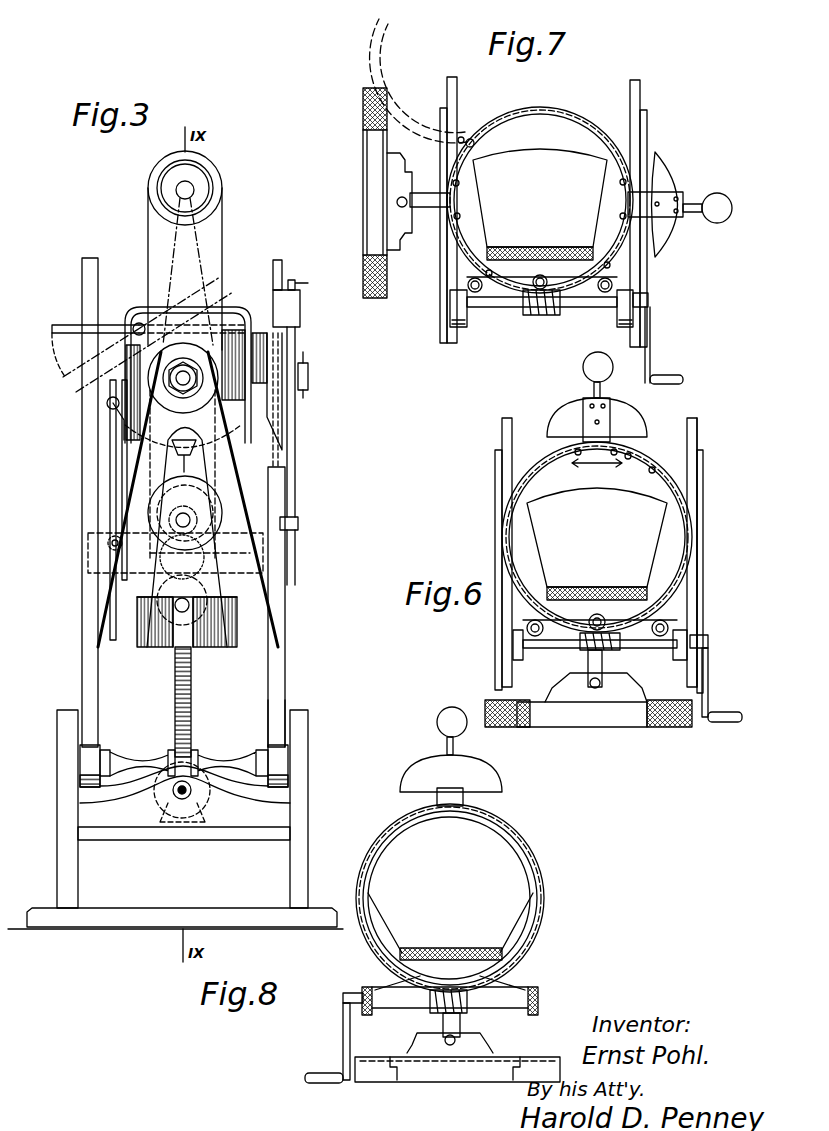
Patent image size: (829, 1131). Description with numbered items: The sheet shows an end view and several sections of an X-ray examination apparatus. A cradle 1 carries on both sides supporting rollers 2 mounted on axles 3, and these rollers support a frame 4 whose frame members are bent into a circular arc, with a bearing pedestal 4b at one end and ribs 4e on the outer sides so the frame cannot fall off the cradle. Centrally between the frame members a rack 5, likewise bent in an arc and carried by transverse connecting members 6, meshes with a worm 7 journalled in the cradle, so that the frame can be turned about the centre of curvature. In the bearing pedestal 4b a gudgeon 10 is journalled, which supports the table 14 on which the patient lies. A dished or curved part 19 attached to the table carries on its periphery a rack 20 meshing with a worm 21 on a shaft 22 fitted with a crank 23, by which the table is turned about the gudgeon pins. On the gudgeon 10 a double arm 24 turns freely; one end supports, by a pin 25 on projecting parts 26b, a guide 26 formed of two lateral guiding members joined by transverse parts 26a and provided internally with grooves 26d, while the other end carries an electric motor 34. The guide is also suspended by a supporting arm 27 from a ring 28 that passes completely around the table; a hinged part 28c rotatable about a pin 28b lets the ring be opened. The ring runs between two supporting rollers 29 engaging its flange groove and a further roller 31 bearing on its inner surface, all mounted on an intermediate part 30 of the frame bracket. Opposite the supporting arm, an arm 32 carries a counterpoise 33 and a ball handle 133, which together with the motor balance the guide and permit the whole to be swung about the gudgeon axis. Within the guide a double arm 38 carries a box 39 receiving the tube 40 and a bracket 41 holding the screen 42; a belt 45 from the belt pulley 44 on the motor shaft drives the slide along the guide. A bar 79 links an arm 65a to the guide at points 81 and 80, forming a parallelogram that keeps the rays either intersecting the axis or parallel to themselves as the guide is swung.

In FIG. 3, the cradle 1 is at (300, 846).
In FIG. 3, the supporting rollers 2 is at (86, 781).
In FIG. 3, the axles 3 is at (80, 763).
In FIG. 7, the axles 3 is at (540, 204).
In FIG. 6, the axles 3 is at (648, 497).
In FIG. 3, the frame 4 is at (85, 660).
In FIG. 6, the frame 4 is at (690, 596).
In FIG. 3, the bearing pedestal 4b is at (238, 476).
In FIG. 3, the ribs 4e is at (286, 681).
In FIG. 3, the rack 5 is at (193, 712).
In FIG. 3, the transverse connecting members 6 is at (142, 752).
In FIG. 3, the worm 7 is at (197, 796).
In FIG. 3, the gudgeon 10 is at (222, 330).
In FIG. 8, the table 14 is at (437, 957).
In FIG. 8, the dished or curved part 19 is at (384, 938).
In FIG. 8, the rack 20 is at (372, 947).
In FIG. 8, the worm 21 is at (468, 1005).
In FIG. 8, the shaft 22 is at (410, 1003).
In FIG. 7, the crank 23 is at (658, 338).
In FIG. 6, the crank 23 is at (708, 684).
In FIG. 8, the crank 23 is at (343, 1046).
In FIG. 3, the double arm 24 is at (161, 226).
In FIG. 3, the pin 25 is at (287, 533).
In FIG. 3, the guide 26 is at (100, 563).
In FIG. 7, the guide 26 is at (368, 105).
In FIG. 6, the guide 26 is at (501, 727).
In FIG. 8, the guide 26 is at (536, 1064).
In FIG. 6, the transverse parts 26a is at (660, 722).
In FIG. 7, the projecting parts 26b is at (393, 186).
In FIG. 6, the projecting parts 26b is at (603, 702).
In FIG. 6, the grooves 26d is at (532, 724).
In FIG. 6, the supporting arm 27 is at (603, 665).
In FIG. 7, the ring 28 is at (470, 250).
In FIG. 6, the ring 28 is at (686, 580).
In FIG. 8, the ring 28 is at (537, 873).
In FIG. 7, the pin 28b is at (472, 140).
In FIG. 7, the hinged part 28c is at (552, 118).
In FIG. 7, the supporting rollers 29 is at (468, 286).
In FIG. 6, the supporting rollers 29 is at (527, 636).
In FIG. 7, the intermediate part 30 is at (522, 290).
In FIG. 6, the intermediate part 30 is at (578, 627).
In FIG. 7, the roller 31 is at (543, 312).
In FIG. 6, the roller 31 is at (598, 612).
In FIG. 7, the arm 32 is at (646, 200).
In FIG. 6, the arm 32 is at (596, 420).
In FIG. 8, the arm 32 is at (450, 797).
In FIG. 7, the counterpoise 33 is at (662, 172).
In FIG. 6, the counterpoise 33 is at (574, 410).
In FIG. 8, the counterpoise 33 is at (418, 768).
In FIG. 3, the electric motor 34 is at (215, 174).
In FIG. 3, the double arm 38 is at (275, 503).
In FIG. 3, the box 39 is at (228, 630).
In FIG. 3, the tube 40 is at (182, 618).
In FIG. 3, the bracket 41 is at (139, 322).
In FIG. 3, the screen 42 is at (67, 322).
In FIG. 3, the belt pulley 44 is at (195, 192).
In FIG. 3, the belt 45 is at (200, 262).
In FIG. 3, the arm 65a is at (107, 404).
In FIG. 3, the bar 79 is at (116, 441).
In FIG. 3, the engagement point 80 is at (108, 544).
In FIG. 3, the engagement point 81 is at (113, 409).
In FIG. 7, the ball handle 133 is at (723, 198).
In FIG. 6, the ball handle 133 is at (590, 370).
In FIG. 8, the ball handle 133 is at (437, 725).